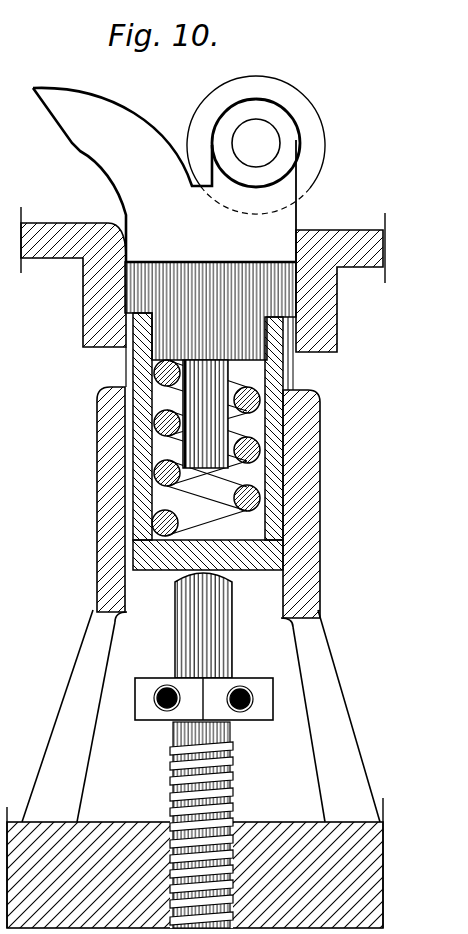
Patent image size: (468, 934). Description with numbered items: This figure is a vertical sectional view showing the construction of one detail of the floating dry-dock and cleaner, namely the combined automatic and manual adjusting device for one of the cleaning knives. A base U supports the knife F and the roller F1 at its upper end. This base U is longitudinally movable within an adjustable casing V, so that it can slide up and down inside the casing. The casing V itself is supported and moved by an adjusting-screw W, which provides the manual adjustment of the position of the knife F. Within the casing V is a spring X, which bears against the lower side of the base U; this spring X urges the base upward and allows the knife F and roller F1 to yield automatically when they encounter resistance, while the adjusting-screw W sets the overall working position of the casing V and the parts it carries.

The knife F is at (122, 175).
The roller F1 is at (320, 128).
The base U is at (210, 365).
The adjustable casing V is at (298, 377).
The spring X is at (206, 448).
The adjusting-screw W is at (232, 753).